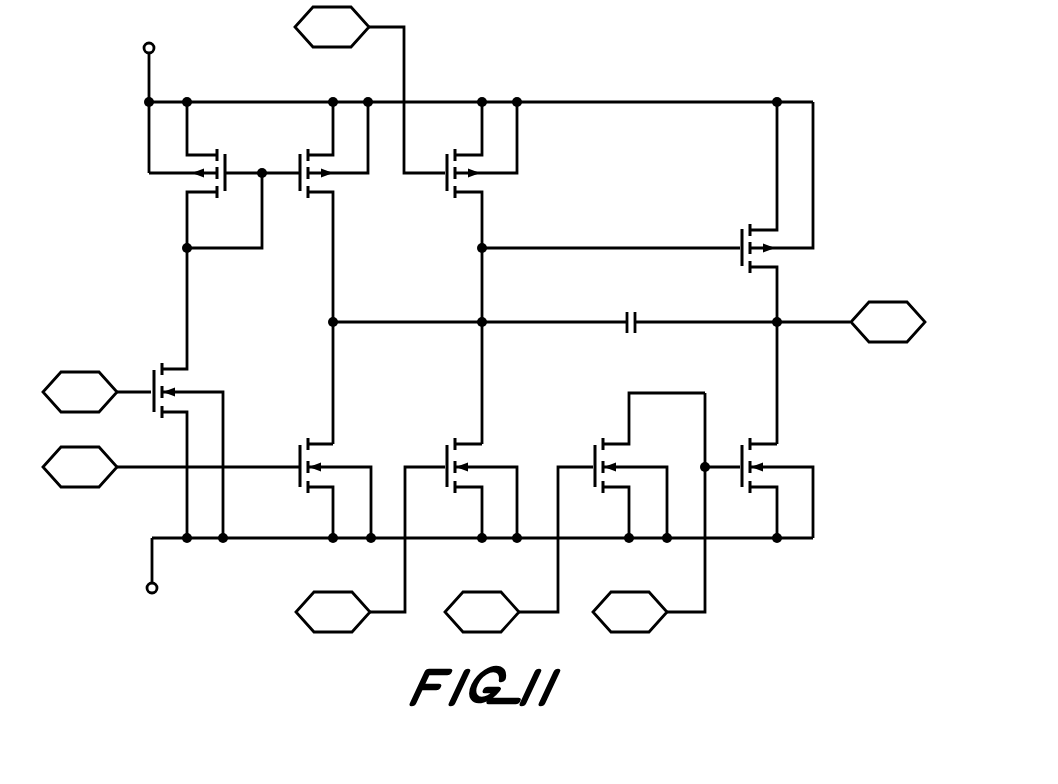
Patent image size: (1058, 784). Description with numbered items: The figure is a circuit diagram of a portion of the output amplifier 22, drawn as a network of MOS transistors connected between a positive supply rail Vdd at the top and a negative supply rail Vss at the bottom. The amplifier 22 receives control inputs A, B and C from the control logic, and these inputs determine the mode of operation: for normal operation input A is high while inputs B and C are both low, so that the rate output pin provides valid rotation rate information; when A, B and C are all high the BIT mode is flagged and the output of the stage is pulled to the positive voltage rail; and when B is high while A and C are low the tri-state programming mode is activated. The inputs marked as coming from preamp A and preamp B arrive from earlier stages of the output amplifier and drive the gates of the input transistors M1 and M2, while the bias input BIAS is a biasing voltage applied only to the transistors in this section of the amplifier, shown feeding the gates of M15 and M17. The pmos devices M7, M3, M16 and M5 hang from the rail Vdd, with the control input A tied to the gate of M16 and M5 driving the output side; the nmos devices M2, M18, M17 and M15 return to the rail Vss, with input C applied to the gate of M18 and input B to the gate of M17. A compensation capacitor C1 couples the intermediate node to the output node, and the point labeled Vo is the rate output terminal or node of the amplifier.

The output amplifier 22 is at (679, 84).
The nmos transistor M1 is at (188, 393).
The nmos transistor M2 is at (244, 460).
The pmos transistor M3 is at (351, 273).
The pmos transistor M5 is at (647, 273).
The pmos transistor M7 is at (210, 175).
The nmos transistor M15 is at (757, 502).
The pmos transistor M16 is at (459, 235).
The nmos transistor M17 is at (612, 497).
The nmos transistor M18 is at (443, 497).
The capacitor C1 (20p) C1 is at (630, 320).
The positive supply rail Vdd is at (475, 93).
The negative supply rail Vss is at (476, 584).
The rate output terminal Vo is at (888, 322).
The control input A is at (201, 209).
The control input B is at (281, 526).
The control input C is at (333, 612).
The bias input BIAS is at (630, 612).